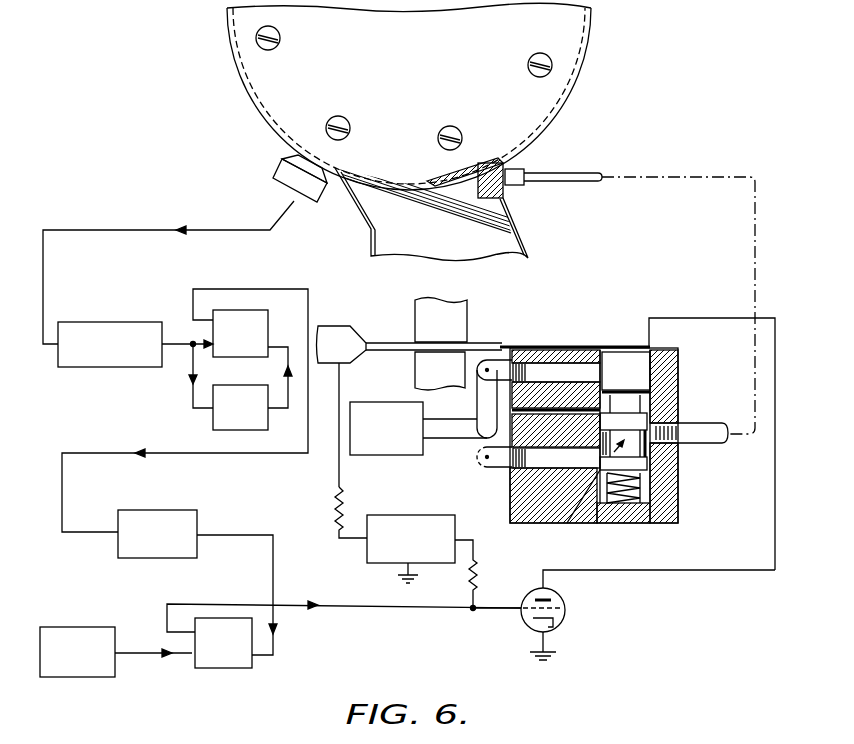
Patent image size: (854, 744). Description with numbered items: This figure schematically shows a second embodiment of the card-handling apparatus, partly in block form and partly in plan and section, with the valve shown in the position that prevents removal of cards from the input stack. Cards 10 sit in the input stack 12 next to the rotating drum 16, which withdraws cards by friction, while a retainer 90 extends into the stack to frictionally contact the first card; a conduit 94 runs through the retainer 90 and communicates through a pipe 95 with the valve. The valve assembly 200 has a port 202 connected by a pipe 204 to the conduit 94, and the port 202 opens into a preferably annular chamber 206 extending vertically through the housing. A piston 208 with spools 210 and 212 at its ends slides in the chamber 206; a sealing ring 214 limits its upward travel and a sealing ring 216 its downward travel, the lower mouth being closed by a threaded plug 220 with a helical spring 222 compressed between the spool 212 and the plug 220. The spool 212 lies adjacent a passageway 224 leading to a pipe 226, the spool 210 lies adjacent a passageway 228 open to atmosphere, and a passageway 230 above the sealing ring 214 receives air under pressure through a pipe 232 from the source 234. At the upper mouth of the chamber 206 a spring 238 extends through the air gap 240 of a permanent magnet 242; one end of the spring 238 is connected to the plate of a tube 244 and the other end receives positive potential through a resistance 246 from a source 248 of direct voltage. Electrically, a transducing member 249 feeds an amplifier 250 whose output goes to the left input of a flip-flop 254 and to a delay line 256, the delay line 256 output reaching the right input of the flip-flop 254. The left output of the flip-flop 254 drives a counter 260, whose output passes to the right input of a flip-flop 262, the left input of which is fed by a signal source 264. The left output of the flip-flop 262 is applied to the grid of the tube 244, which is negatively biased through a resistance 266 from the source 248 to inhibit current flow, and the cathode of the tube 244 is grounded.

The cards 10 is at (447, 221).
The input stack 12 is at (519, 230).
The drum 16 is at (568, 86).
The retainer 90 is at (515, 160).
The conduit 94 is at (483, 167).
The pipe 95 is at (578, 174).
The valve assembly 200 is at (690, 518).
The port 202 is at (678, 442).
The pipe 204 is at (690, 427).
The chamber 206 is at (633, 362).
The piston 208 is at (568, 509).
The spool 210 is at (630, 420).
The spool 212 is at (646, 462).
The sealing ring 214 is at (657, 391).
The sealing ring 216 is at (648, 470).
The plug 220 is at (617, 510).
The helical spring 222 is at (637, 507).
The passageway 224 is at (538, 466).
The pipe 226 is at (477, 453).
The passageway 228 is at (583, 407).
The passageway 230 is at (550, 368).
The pipe 232 is at (467, 417).
The source of air under pressure 234 is at (385, 455).
The spring 238 is at (477, 343).
The air gap 240 is at (428, 340).
The permanent magnet 242 is at (463, 305).
The tube 244 is at (565, 614).
The resistance 246 is at (335, 504).
The source of direct voltage 248 is at (367, 550).
The transducing member 249 is at (287, 173).
The amplifier 250 is at (82, 322).
The flip-flop 254 is at (219, 360).
The delay line 256 is at (213, 427).
The counter 260 is at (155, 510).
The flip-flop 262 is at (228, 670).
The signal source 264 is at (78, 627).
The resistance 266 is at (477, 567).